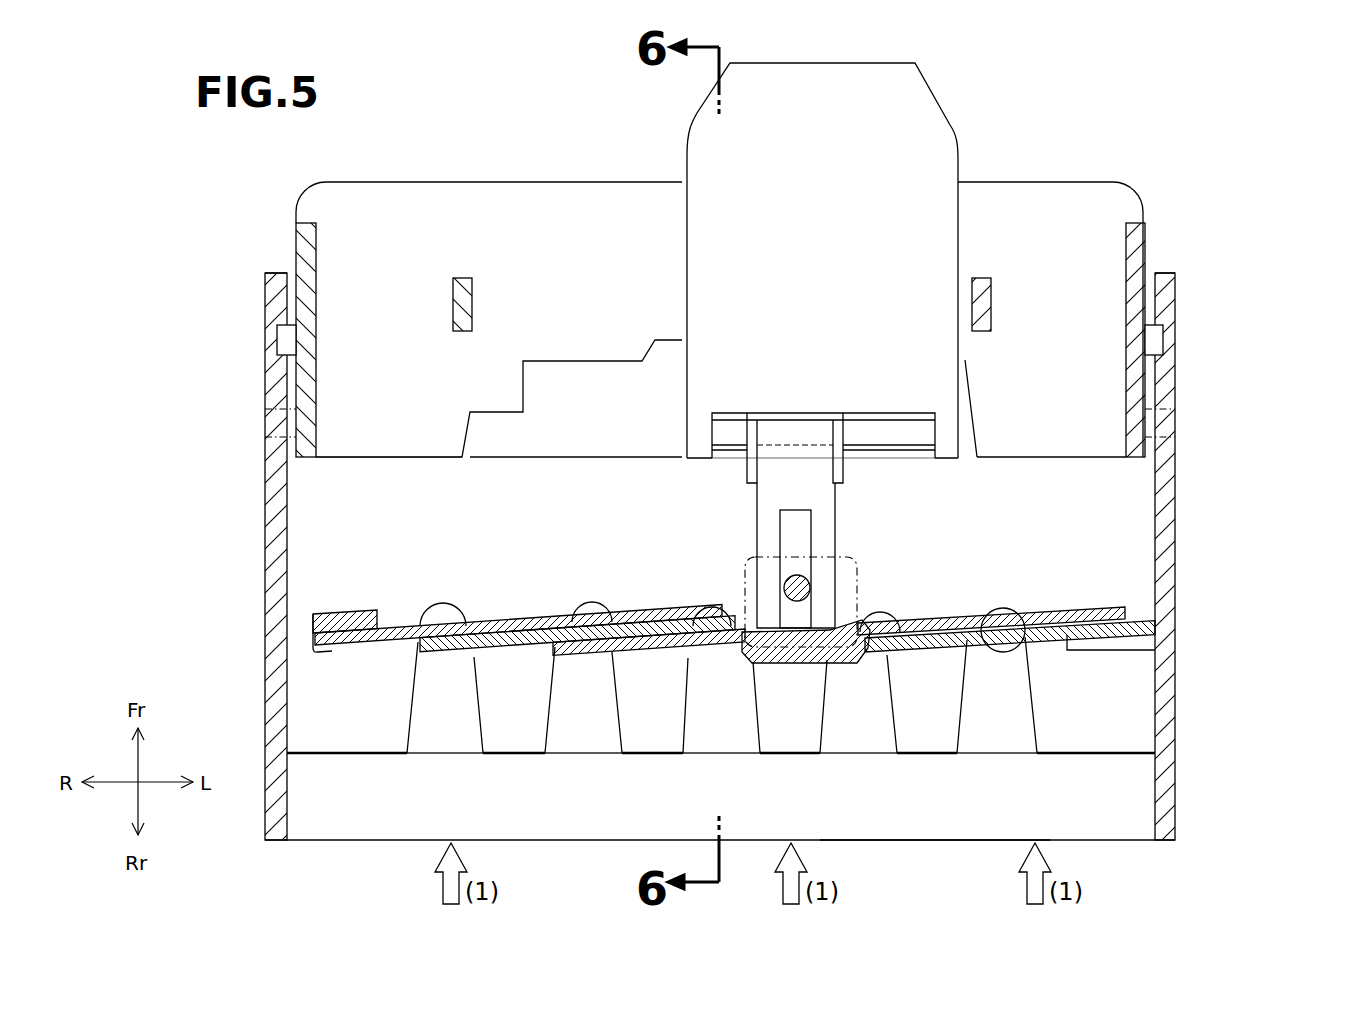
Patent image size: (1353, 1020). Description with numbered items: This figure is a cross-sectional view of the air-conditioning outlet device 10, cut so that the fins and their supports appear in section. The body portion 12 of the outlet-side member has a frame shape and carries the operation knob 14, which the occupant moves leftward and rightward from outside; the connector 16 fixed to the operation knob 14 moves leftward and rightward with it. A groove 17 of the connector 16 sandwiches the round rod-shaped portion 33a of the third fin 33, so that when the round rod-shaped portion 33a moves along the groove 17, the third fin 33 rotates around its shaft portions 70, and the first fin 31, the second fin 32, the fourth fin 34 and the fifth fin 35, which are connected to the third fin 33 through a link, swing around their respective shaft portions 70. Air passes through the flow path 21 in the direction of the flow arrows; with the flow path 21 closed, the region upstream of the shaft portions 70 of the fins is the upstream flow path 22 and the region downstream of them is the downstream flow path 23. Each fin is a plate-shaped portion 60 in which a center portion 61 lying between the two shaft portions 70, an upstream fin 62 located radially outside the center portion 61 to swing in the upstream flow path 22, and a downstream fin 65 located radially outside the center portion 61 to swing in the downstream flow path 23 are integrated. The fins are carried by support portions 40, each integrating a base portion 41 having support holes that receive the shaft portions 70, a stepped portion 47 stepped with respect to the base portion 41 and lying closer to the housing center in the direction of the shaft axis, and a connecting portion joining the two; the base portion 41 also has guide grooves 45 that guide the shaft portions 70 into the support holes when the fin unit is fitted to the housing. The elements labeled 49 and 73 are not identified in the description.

The air-conditioning outlet device 10 is at (1230, 116).
The body portion 12 is at (522, 228).
The operation knob 14 is at (888, 115).
The connector 16 is at (797, 427).
The groove 17 is at (803, 523).
The flow path 21 is at (365, 508).
The upstream flow path 22 is at (677, 815).
The downstream flow path 23 is at (675, 508).
The first fin 31 is at (936, 660).
The second fin 32 is at (801, 678).
The third fin 33 is at (658, 662).
The round rod-shaped portion 33a is at (806, 586).
The fourth fin 34 is at (523, 667).
The fifth fin 35 is at (378, 665).
The support portion 40 is at (1114, 838).
The base portion 41 is at (1037, 495).
The guide groove 45 is at (446, 733).
The stepped portion 47 is at (935, 813).
The side wall 49 is at (265, 547).
The plate-shaped portion 60 is at (578, 550).
The center portion 61 is at (447, 622).
The upstream fin 62 is at (336, 640).
The downstream fin 65 is at (562, 612).
The shaft portion 70 is at (823, 589).
The bolt 73 is at (1030, 584).